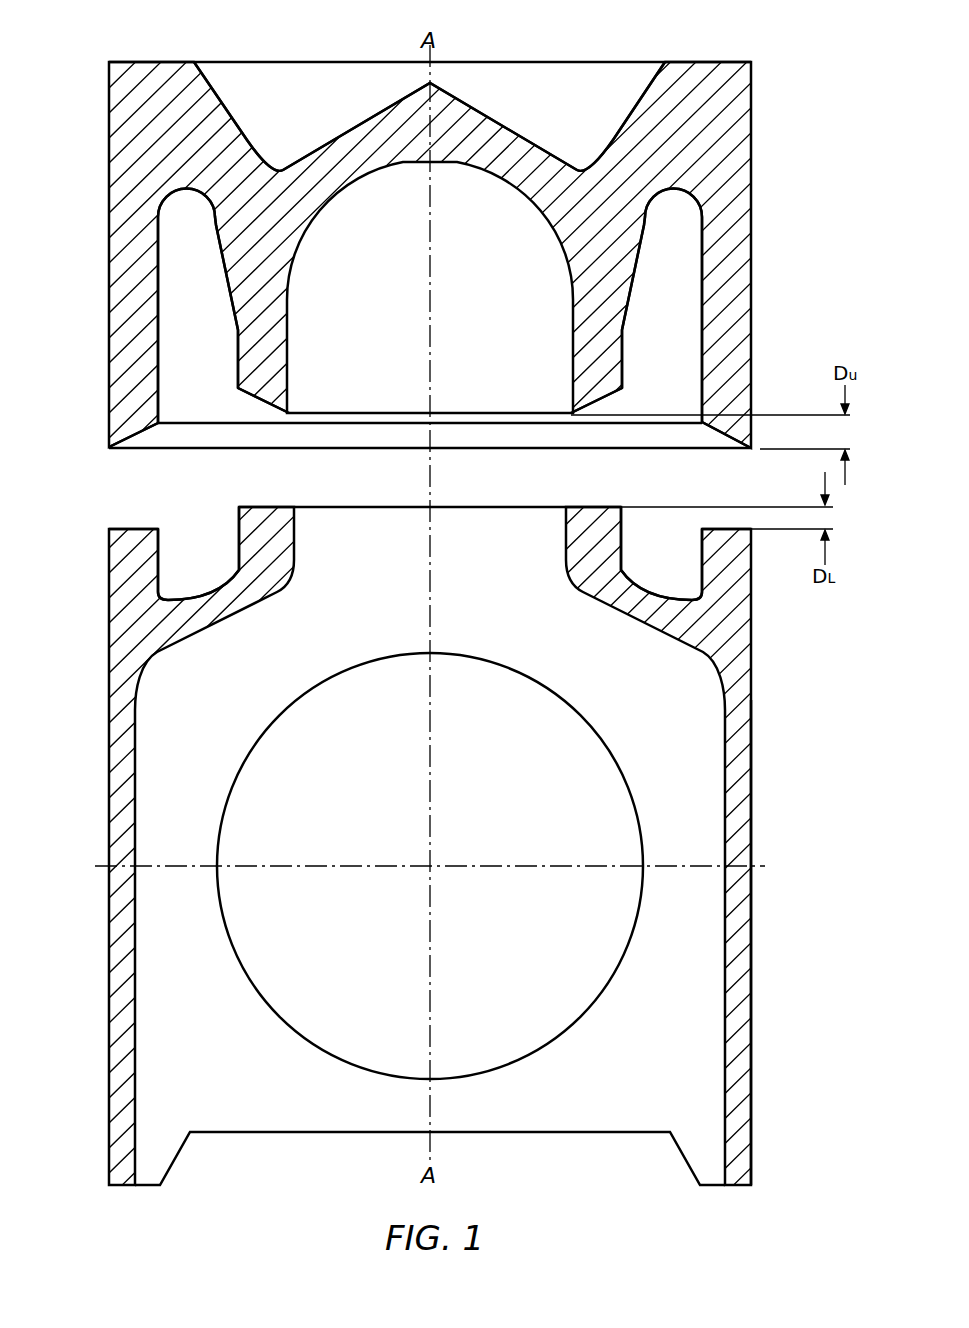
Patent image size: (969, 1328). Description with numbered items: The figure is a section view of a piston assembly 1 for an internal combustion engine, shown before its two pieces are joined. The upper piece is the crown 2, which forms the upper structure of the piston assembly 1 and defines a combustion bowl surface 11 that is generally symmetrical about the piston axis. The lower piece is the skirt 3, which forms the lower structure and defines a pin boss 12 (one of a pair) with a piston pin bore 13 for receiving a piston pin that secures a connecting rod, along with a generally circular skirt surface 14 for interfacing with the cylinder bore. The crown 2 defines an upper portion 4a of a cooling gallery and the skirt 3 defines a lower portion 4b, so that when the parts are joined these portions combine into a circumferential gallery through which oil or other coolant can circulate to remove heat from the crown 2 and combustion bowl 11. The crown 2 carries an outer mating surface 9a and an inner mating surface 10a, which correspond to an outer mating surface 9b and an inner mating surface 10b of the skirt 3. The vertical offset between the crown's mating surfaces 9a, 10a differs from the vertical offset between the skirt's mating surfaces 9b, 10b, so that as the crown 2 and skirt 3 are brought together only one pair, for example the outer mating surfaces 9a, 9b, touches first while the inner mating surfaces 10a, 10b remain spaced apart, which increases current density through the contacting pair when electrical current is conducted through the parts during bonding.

The piston assembly 1 is at (84, 62).
The upper part or crown 2 is at (772, 62).
The lower part or skirt 3 is at (772, 529).
The upper portion of the cooling gallery 4a is at (205, 311).
The lower portion of the cooling gallery 4b is at (208, 575).
The outer mating surface of the crown 9a is at (140, 436).
The outer mating surface of the skirt 9b is at (135, 528).
The inner mating surface of the crown 10a is at (256, 398).
The inner mating surface of the skirt 10b is at (268, 508).
The combustion bowl surface 11 is at (580, 90).
The pin boss 12 is at (288, 1110).
The piston pin bore 13 is at (287, 1024).
The skirt surface 14 is at (757, 995).